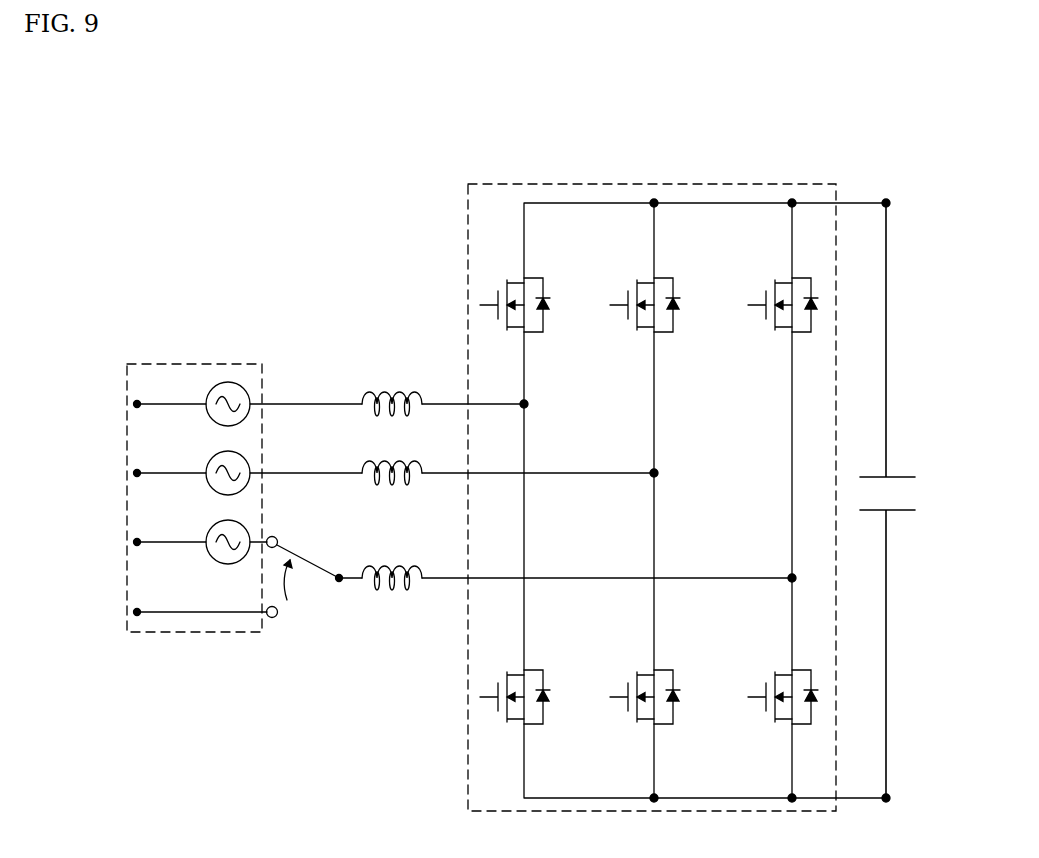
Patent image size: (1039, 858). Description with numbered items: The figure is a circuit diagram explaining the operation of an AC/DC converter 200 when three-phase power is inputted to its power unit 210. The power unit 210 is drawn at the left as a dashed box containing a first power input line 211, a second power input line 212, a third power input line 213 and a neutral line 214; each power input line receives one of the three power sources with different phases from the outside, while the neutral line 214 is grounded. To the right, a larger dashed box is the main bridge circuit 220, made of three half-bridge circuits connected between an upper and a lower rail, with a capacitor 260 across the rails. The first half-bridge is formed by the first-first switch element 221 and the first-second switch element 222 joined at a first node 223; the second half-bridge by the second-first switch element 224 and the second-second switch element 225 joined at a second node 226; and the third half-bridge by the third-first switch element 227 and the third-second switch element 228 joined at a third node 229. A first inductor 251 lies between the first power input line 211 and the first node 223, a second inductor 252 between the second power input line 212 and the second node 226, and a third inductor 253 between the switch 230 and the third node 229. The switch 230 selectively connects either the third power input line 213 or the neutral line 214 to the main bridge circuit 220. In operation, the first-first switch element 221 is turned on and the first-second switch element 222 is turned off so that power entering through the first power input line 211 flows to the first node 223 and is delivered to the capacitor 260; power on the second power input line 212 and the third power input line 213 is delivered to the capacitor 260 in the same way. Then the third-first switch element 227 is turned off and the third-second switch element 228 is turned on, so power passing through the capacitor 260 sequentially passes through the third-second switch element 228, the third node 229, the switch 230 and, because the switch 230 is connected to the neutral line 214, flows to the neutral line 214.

The AC/DC converter 200 is at (283, 109).
The power unit 210 is at (218, 364).
The first power input line 211 is at (173, 407).
The second power input line 212 is at (173, 475).
The third power input line 213 is at (182, 545).
The neutral line 214 is at (208, 615).
The main bridge circuit 220 is at (760, 184).
The first-first switch element 221 is at (542, 278).
The first-second switch element 222 is at (542, 669).
The first node 223 is at (528, 404).
The second-first switch element 224 is at (672, 283).
The second-second switch element 225 is at (672, 669).
The second node 226 is at (658, 472).
The third-first switch element 227 is at (775, 330).
The third-second switch element 228 is at (775, 720).
The third node 229 is at (790, 577).
The switch 230 is at (312, 560).
The first inductor 251 is at (388, 392).
The second inductor 252 is at (390, 466).
The third inductor 253 is at (390, 572).
The capacitor 260 is at (900, 477).